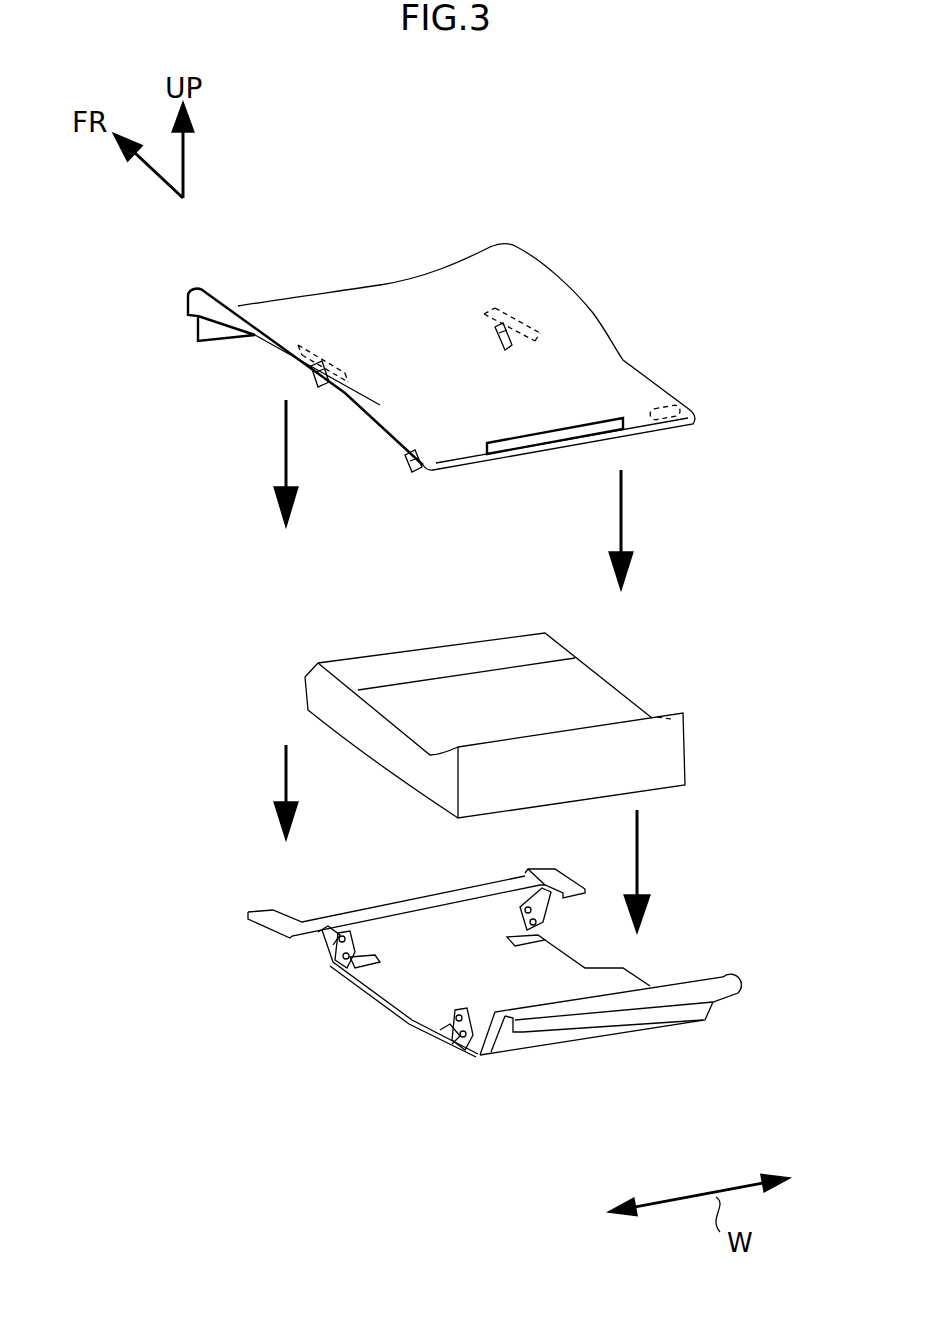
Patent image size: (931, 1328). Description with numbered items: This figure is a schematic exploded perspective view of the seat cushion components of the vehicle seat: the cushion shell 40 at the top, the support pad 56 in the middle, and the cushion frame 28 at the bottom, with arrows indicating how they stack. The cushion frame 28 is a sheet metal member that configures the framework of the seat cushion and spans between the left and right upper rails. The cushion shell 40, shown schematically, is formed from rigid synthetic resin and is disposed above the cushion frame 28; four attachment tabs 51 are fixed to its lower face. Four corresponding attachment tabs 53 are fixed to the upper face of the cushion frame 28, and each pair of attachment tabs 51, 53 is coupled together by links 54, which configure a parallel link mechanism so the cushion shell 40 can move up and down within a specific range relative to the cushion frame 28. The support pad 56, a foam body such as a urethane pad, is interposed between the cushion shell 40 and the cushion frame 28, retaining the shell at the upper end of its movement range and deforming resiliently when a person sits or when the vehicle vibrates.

The cushion frame 28 is at (603, 1037).
The cushion shell 40 is at (622, 365).
The attachment tabs 51 is at (318, 388).
The attachment tabs 53 is at (545, 937).
The links 54 is at (560, 877).
The support pad 56 is at (672, 757).